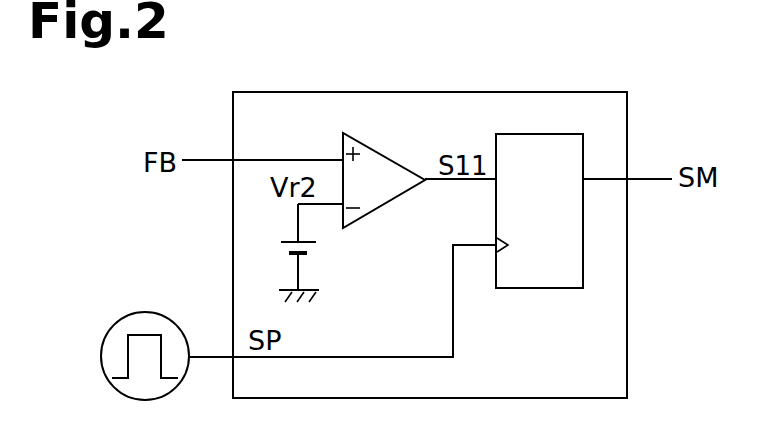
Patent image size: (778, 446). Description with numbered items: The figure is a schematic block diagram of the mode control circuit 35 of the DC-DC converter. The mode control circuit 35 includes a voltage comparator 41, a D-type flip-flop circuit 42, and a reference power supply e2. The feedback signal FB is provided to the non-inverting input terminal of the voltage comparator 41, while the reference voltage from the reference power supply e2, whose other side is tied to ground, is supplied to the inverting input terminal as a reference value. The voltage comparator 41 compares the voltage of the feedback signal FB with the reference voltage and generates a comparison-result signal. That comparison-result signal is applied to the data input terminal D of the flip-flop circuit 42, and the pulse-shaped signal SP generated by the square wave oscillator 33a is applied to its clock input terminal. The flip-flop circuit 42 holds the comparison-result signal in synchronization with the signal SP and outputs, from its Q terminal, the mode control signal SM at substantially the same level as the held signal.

The mode control circuit 35 is at (628, 116).
The voltage comparator 41 is at (400, 140).
The flip-flop circuit 42 is at (539, 134).
The reference power supply e2 is at (307, 256).
The square wave oscillator 33a is at (142, 312).